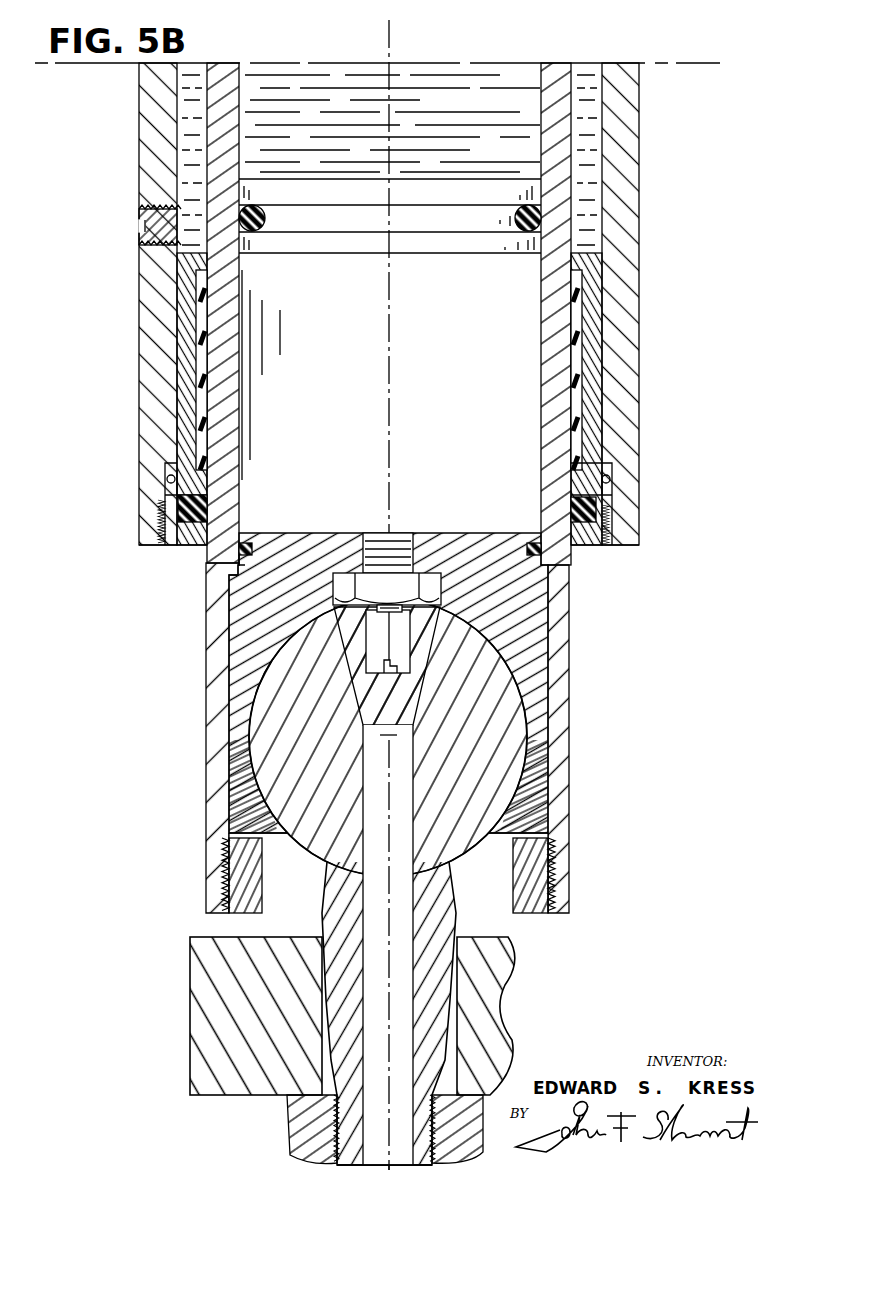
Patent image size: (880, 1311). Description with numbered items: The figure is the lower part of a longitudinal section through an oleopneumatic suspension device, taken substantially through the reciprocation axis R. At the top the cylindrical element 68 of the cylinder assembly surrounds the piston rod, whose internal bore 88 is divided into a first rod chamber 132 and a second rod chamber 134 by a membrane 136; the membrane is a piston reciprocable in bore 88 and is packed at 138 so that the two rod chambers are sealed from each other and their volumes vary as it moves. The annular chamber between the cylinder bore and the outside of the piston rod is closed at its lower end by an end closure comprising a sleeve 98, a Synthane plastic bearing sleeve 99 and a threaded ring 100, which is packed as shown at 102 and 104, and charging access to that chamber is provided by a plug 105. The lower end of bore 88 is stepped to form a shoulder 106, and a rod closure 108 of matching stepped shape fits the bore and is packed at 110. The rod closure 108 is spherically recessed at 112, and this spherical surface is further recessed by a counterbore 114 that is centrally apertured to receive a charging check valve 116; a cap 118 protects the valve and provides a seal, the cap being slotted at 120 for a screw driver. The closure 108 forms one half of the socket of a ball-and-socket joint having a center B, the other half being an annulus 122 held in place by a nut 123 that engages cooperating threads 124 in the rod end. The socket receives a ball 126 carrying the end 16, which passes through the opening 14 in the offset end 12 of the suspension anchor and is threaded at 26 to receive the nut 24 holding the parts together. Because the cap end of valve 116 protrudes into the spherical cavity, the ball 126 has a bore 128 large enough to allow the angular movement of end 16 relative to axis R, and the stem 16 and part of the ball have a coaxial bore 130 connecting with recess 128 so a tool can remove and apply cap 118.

The offset end 12 is at (190, 973).
The opening 14 is at (447, 985).
The end 16 is at (468, 1001).
The nut 24 is at (287, 1138).
The threads 26 is at (335, 1148).
The cylindrical element 68 is at (629, 101).
The internal bore 88 is at (241, 408).
The sleeve 98 is at (187, 296).
The Synthane plastic bearing sleeve 99 is at (573, 382).
The threaded ring 100 is at (170, 546).
The packing 102 is at (167, 479).
The packing 104 is at (178, 510).
The plug 105 is at (143, 229).
The shoulder 106 is at (548, 568).
The rod closure 108 is at (531, 617).
The packing 110 is at (250, 541).
The spherical recess 112 is at (275, 652).
The counterbore 114 is at (452, 566).
The charging check valve 116 is at (390, 546).
The cap 118 is at (408, 668).
The slot 120 is at (376, 679).
The annulus 122 is at (535, 793).
The nut 123 is at (530, 908).
The threads 124 is at (548, 888).
The ball 126 is at (333, 845).
The bore 128 is at (343, 625).
The bore 130 is at (386, 1145).
The first rod chamber 132 is at (519, 322).
The second rod chamber 134 is at (527, 137).
The membrane 136 is at (374, 243).
The packing 138 is at (257, 231).
The reciprocation axis R is at (389, 365).
The center B is at (412, 727).